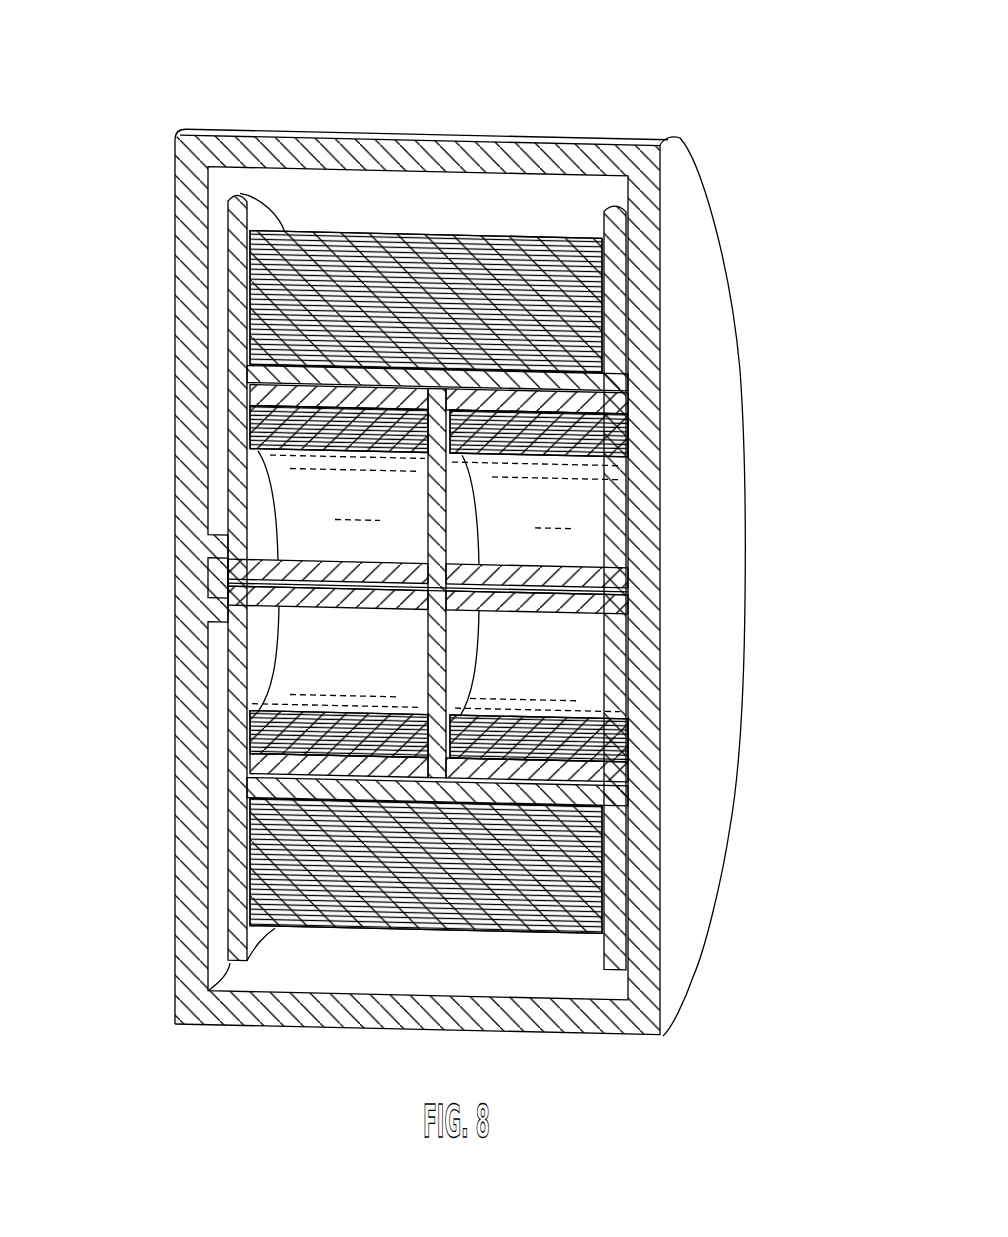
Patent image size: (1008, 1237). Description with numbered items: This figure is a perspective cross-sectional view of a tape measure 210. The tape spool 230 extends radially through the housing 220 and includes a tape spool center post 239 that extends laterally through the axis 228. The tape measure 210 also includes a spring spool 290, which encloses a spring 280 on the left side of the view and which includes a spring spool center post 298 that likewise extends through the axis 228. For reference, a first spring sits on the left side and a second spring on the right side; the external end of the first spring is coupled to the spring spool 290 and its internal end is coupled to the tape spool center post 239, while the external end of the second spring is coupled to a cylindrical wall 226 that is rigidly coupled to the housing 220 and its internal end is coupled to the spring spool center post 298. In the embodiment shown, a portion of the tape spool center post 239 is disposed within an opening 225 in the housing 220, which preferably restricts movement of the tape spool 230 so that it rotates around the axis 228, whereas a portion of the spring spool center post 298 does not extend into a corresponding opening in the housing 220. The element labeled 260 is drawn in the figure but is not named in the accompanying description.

The tape measure 210 is at (228, 79).
The housing 220 is at (718, 301).
The opening 225 is at (203, 584).
The cylindrical wall 226 is at (564, 401).
The axis 228 is at (205, 578).
The tape spool 230 is at (264, 208).
The tape spool center post 239 is at (246, 663).
The coil 260 is at (464, 258).
The spring 280 is at (546, 492).
The spring spool 290 is at (314, 397).
The spring spool center post 298 is at (546, 600).